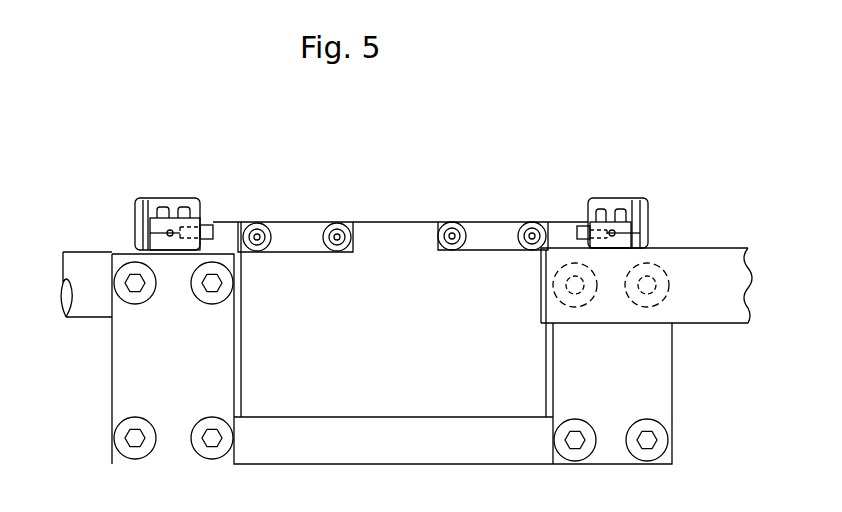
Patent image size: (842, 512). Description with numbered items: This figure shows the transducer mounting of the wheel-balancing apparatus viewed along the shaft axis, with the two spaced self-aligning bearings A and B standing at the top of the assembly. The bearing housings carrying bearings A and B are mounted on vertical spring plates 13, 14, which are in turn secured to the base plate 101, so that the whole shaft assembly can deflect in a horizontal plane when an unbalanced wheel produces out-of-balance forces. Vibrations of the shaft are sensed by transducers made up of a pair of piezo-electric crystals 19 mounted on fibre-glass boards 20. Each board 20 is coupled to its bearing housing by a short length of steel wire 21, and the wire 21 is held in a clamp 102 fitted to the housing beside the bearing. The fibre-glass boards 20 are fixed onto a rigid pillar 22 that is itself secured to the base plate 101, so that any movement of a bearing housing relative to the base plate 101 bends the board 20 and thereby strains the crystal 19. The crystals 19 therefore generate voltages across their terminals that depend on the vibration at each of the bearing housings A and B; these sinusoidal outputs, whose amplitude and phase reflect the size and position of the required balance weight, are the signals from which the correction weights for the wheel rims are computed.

The base plate 101 is at (389, 454).
The vertical spring plate 13 is at (393, 319).
The vertical spring plate 14 is at (565, 348).
The piezo-electric crystal 19 is at (208, 228).
The fibre-glass board 20 is at (236, 236).
The steel wire 21 is at (150, 233).
The rigid pillar 22 is at (313, 320).
The clamp 102 is at (172, 224).
The bearing A is at (171, 184).
The bearing B is at (616, 184).